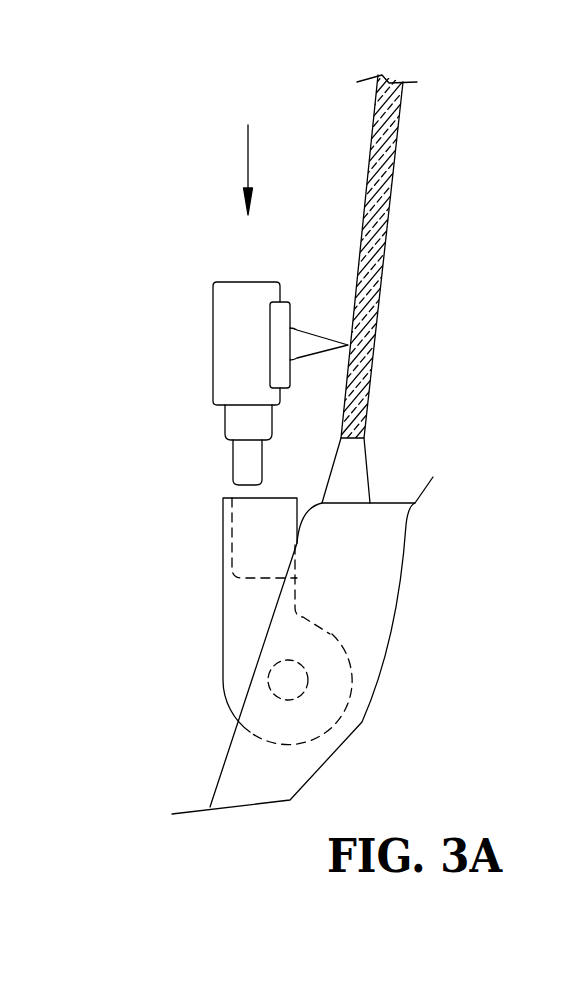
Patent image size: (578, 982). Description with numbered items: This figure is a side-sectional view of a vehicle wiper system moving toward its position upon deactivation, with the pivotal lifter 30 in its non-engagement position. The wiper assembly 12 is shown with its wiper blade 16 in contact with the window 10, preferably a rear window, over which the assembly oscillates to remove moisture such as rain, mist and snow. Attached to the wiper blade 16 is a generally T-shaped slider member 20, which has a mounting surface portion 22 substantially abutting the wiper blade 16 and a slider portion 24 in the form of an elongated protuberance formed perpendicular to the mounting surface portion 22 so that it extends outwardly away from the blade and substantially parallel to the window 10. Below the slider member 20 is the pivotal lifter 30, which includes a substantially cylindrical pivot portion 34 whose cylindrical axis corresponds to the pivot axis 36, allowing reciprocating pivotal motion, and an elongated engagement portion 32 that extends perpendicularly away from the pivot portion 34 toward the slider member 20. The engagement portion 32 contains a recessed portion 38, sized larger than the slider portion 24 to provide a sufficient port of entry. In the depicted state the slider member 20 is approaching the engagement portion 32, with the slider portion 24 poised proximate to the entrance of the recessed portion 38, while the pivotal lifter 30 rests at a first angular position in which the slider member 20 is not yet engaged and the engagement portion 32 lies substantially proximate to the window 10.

The window 10 is at (389, 216).
The wiper assembly 12 is at (158, 321).
The wiper blade 16 is at (218, 320).
The slider member 20 is at (146, 399).
The mounting surface portion 22 is at (232, 423).
The slider portion 24 is at (238, 465).
The pivotal lifter 30 is at (206, 705).
The engagement portion 32 is at (222, 594).
The pivot portion 34 is at (342, 644).
The pivot axis 36 is at (290, 688).
The recessed portion 38 is at (272, 558).